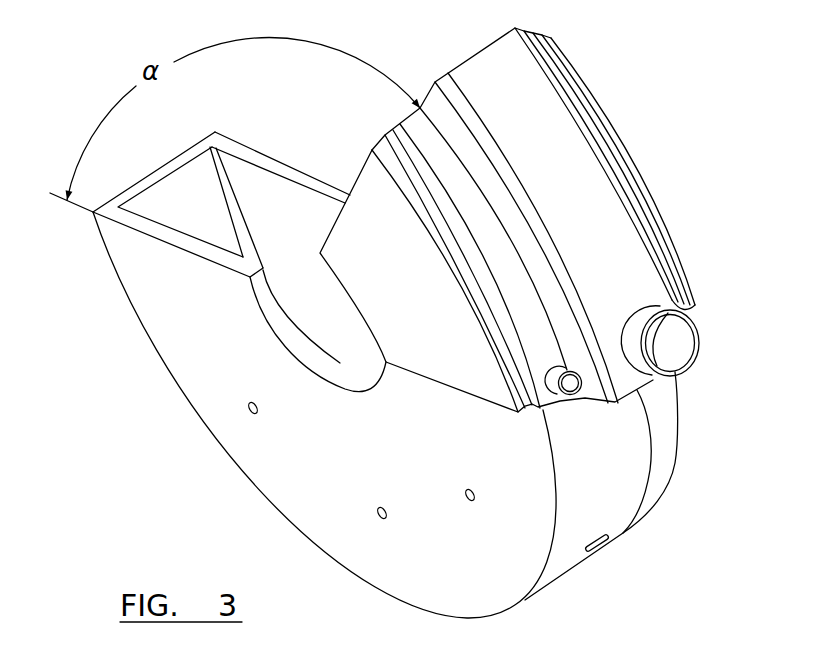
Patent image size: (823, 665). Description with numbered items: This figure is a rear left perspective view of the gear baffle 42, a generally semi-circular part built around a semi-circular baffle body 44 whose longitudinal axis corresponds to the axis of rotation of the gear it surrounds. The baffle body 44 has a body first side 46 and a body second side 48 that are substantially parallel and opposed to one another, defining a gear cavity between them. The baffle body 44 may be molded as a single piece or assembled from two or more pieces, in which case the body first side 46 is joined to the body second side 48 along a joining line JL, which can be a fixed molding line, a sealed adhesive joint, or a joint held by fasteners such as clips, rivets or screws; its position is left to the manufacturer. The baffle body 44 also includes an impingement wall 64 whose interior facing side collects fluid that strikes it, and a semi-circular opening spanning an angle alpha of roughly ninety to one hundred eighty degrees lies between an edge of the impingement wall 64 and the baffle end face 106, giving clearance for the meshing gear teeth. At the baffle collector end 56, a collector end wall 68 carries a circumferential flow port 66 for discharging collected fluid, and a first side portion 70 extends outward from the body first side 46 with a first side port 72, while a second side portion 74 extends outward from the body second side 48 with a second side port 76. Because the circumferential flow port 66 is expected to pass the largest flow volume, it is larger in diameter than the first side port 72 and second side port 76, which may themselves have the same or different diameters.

The baffle 42 is at (647, 90).
The semi-circular baffle body 44 is at (627, 485).
The body first side 46 is at (135, 229).
The body second side 48 is at (291, 160).
The baffle collector end 56 is at (452, 350).
The impingement wall 64 is at (528, 118).
The circumferential flow port 66 is at (678, 345).
The collector end wall 68 is at (637, 392).
The first side portion 70 is at (540, 333).
The first side port 72 is at (574, 395).
The second side portion 74 is at (658, 240).
The second side port 76 is at (693, 305).
The baffle end face 106 is at (141, 172).
The joining line JL is at (221, 182).